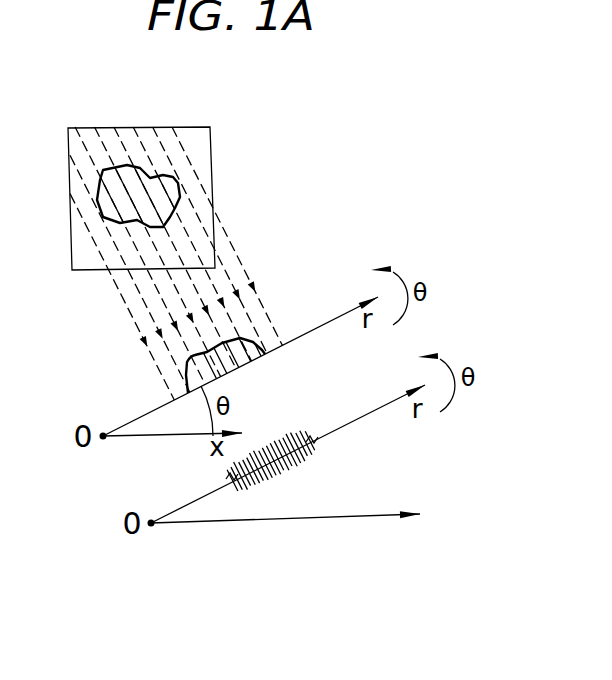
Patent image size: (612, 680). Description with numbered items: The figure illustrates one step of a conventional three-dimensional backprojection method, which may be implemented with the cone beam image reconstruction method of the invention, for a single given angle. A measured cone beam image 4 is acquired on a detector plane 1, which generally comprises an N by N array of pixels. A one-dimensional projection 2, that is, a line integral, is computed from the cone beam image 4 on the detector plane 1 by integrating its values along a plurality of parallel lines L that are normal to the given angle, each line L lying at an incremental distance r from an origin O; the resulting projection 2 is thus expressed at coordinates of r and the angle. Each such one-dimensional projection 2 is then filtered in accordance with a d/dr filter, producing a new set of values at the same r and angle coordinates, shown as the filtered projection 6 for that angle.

The detector plane 1 is at (198, 127).
The projection 2 is at (258, 331).
The cone beam image 4 is at (103, 170).
The filtered projection 6 is at (297, 442).
The parallel lines L is at (222, 283).